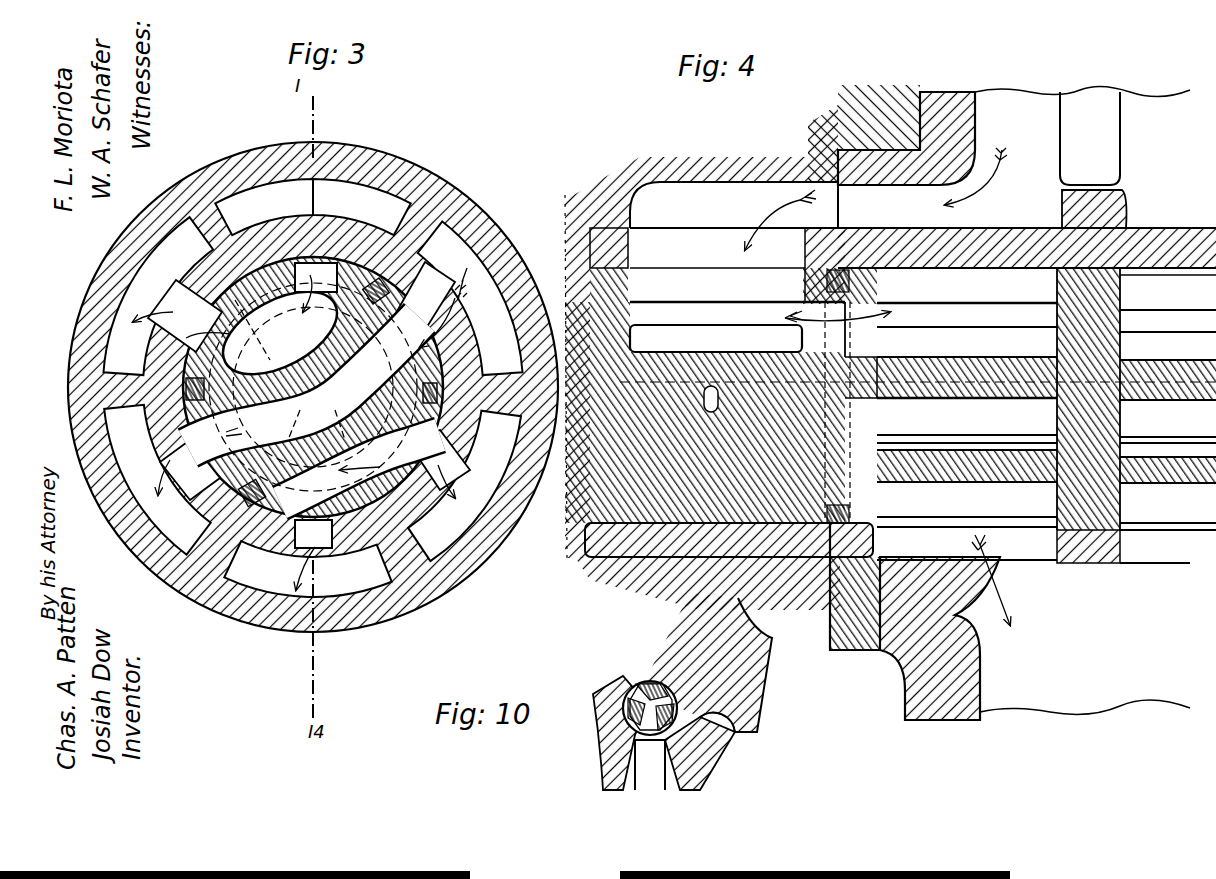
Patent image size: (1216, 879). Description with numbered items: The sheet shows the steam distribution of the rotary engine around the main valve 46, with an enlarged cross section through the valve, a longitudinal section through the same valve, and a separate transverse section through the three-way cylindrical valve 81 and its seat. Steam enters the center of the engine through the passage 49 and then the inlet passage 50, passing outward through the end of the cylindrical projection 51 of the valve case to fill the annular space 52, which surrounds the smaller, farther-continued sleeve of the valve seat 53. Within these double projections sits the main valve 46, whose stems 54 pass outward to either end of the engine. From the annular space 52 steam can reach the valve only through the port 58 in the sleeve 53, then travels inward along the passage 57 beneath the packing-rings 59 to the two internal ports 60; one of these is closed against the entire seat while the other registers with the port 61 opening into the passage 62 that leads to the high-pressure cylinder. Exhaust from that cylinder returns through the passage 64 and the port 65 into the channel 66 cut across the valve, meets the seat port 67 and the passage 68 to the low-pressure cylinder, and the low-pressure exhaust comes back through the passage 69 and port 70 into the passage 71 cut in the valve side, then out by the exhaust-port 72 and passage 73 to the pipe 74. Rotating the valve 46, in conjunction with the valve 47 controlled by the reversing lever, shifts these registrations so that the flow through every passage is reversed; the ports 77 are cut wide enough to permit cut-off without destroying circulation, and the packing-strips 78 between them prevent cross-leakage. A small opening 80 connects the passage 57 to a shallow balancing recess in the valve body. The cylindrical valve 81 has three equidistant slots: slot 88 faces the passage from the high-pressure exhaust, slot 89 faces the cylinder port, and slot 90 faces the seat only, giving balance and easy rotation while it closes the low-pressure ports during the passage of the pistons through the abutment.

In FIG. 3, the main valve 46 is at (206, 508).
In FIG. 4, the main valve 46 is at (885, 420).
In FIG. 3, the valve 47 is at (470, 352).
In FIG. 4, the passage 49 is at (1082, 157).
In FIG. 3, the passage 50 is at (264, 207).
In FIG. 4, the passage 50 is at (1090, 182).
In FIG. 4, the cylindrical projection 51 is at (958, 150).
In FIG. 4, the annular space 52 is at (734, 205).
In FIG. 4, the valve case or seat 53 is at (648, 246).
In FIG. 4, the stems 54 is at (570, 490).
In FIG. 3, the passage 57 is at (280, 333).
In FIG. 4, the passage 57 is at (797, 396).
In FIG. 3, the port 58 is at (332, 232).
In FIG. 4, the port 58 is at (717, 265).
In FIG. 3, the packing-rings 59 is at (276, 316).
In FIG. 4, the packing-rings 59 is at (872, 250).
In FIG. 3, the internal ports 60 is at (261, 306).
In FIG. 4, the internal ports 60 is at (953, 292).
In FIG. 3, the port 61 is at (185, 316).
In FIG. 4, the port 61 is at (673, 338).
In FIG. 3, the passage 62 is at (159, 296).
In FIG. 3, the passage 64 is at (467, 270).
In FIG. 10, the passage 64 is at (632, 690).
In FIG. 3, the port 65 is at (423, 300).
In FIG. 3, the channel 66 is at (304, 383).
In FIG. 3, the port 67 is at (190, 470).
In FIG. 3, the passage 68 is at (157, 480).
In FIG. 10, the passage 68 is at (650, 765).
In FIG. 3, the passage 69 is at (464, 486).
In FIG. 3, the port 70 is at (440, 460).
In FIG. 3, the passage 71 is at (360, 469).
In FIG. 3, the exhaust-port 72 is at (313, 534).
In FIG. 3, the passage 73 is at (307, 569).
In FIG. 4, the pipe 74 is at (1035, 627).
In FIG. 3, the ports 77 is at (311, 392).
In FIG. 3, the packing-strips 78 is at (410, 290).
In FIG. 3, the small opening 80 is at (341, 393).
In FIG. 4, the small opening 80 is at (716, 392).
In FIG. 10, the cylindrical valves 81 is at (625, 722).
In FIG. 10, the slot 88 is at (668, 742).
In FIG. 10, the slot 89 is at (636, 690).
In FIG. 10, the slot 90 is at (717, 722).